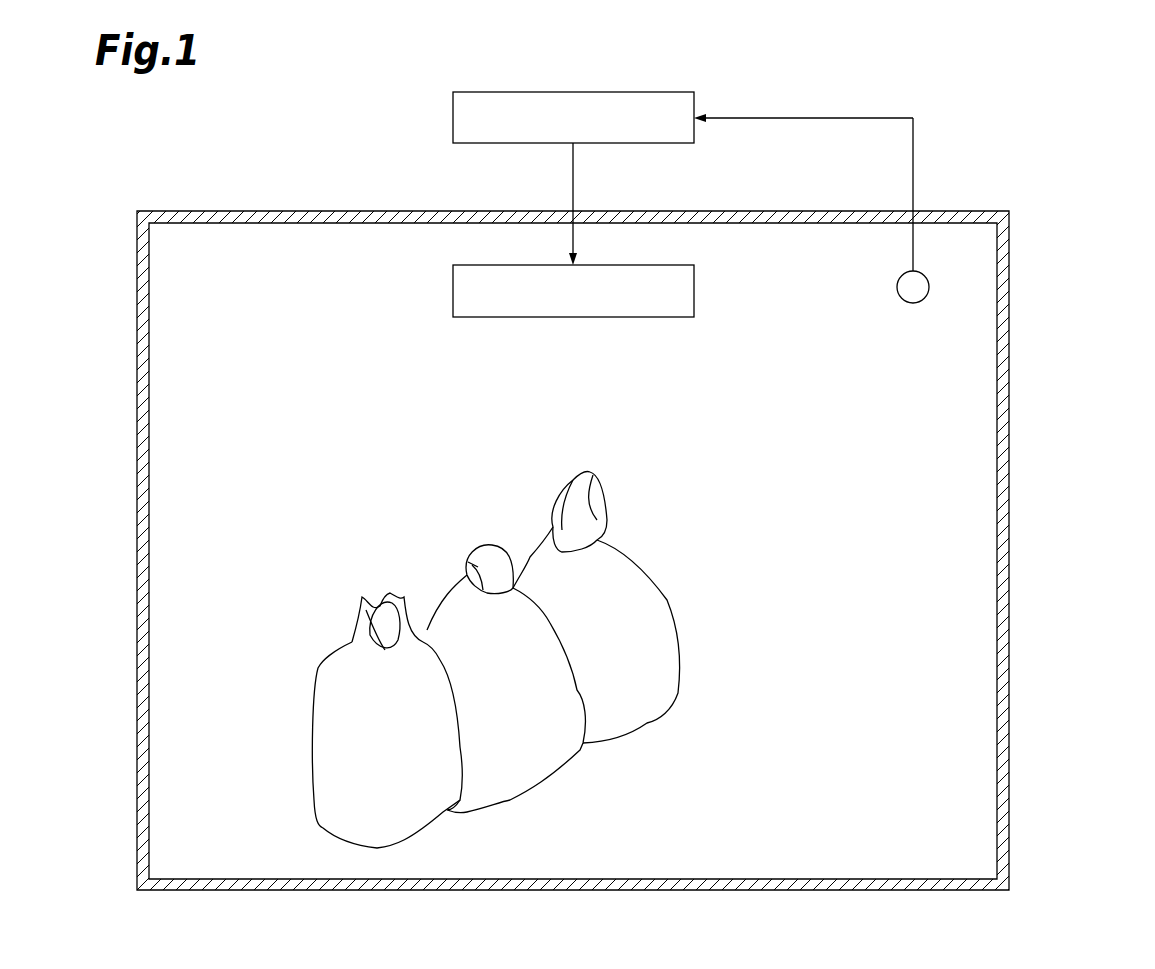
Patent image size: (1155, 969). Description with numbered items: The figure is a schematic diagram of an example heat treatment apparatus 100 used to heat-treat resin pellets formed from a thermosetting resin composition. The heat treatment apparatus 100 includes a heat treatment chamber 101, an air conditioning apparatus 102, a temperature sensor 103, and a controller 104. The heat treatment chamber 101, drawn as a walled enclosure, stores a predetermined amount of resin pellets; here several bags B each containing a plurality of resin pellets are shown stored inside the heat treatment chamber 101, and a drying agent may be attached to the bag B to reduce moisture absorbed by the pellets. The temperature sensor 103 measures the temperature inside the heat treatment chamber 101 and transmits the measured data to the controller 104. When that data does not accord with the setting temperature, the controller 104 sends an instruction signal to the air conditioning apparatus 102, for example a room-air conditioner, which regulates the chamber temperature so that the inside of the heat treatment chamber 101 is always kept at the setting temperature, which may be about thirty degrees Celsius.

The heat treatment apparatus 100 is at (1053, 125).
The heat treatment chamber 101 is at (1010, 470).
The air conditioning apparatus 102 is at (696, 292).
The temperature sensor 103 is at (899, 280).
The controller 104 is at (697, 97).
The bag B is at (412, 818).